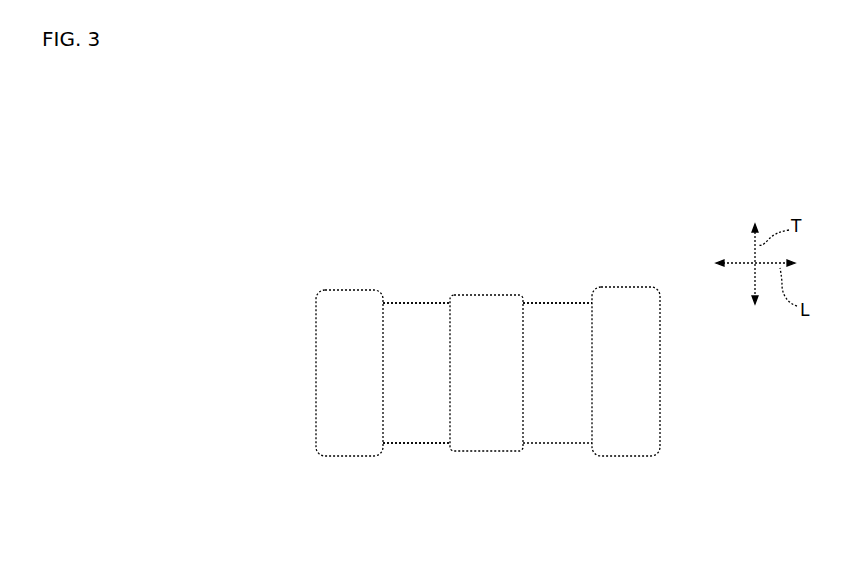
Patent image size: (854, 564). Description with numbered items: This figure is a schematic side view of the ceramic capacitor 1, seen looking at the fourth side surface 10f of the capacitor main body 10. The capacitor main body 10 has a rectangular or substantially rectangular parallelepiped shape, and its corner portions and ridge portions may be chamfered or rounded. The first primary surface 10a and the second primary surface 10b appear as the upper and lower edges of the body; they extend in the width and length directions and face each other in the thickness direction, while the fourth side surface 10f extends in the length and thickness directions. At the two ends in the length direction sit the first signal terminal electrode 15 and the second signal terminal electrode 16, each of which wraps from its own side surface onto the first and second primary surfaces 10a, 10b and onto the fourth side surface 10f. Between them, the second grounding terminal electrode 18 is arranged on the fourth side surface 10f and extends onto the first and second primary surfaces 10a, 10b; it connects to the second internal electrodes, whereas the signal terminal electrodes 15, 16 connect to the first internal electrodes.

The ceramic capacitor 1 is at (661, 274).
The capacitor main body 10 is at (553, 445).
The first primary surface 10a is at (556, 303).
The second primary surface 10b is at (413, 443).
The fourth side surface 10f is at (418, 303).
The first signal terminal electrode 15 is at (315, 394).
The second signal terminal electrode 16 is at (661, 430).
The second grounding terminal electrode 18 is at (470, 295).